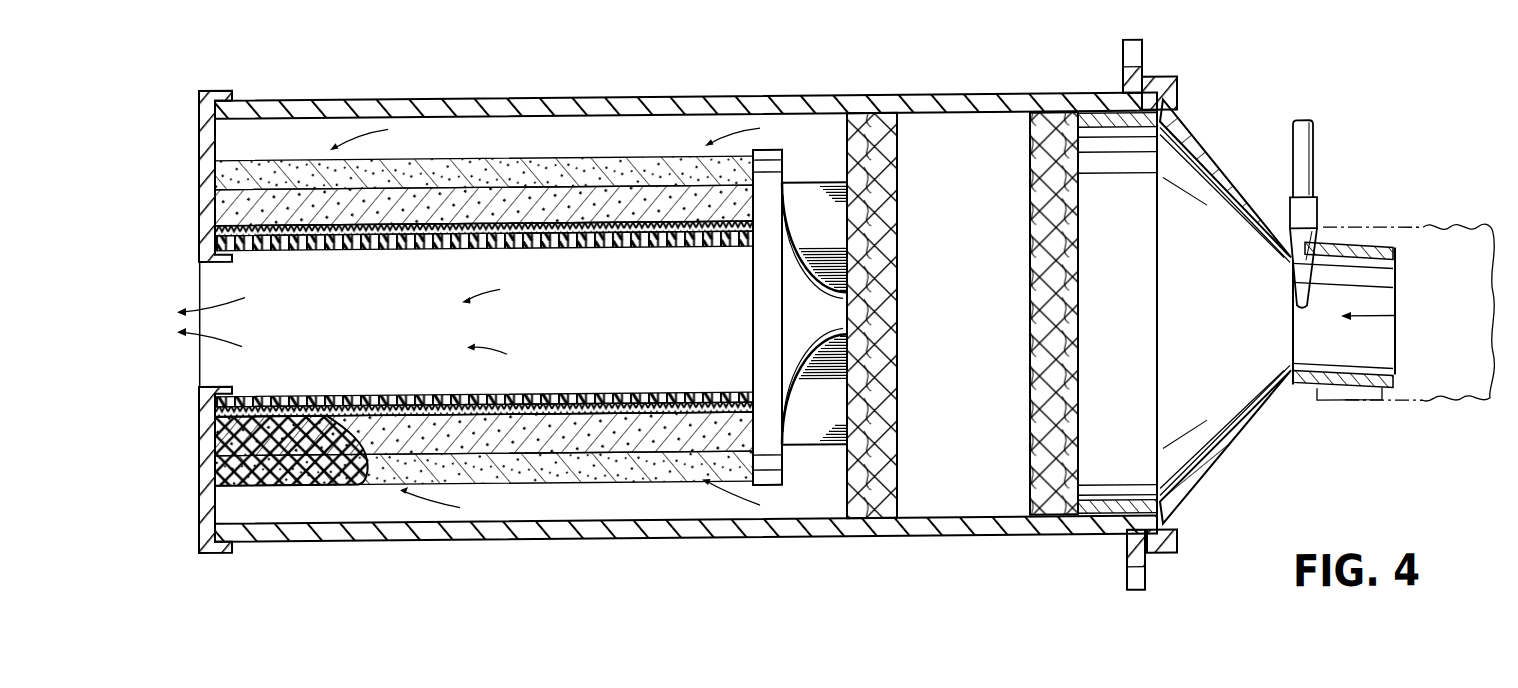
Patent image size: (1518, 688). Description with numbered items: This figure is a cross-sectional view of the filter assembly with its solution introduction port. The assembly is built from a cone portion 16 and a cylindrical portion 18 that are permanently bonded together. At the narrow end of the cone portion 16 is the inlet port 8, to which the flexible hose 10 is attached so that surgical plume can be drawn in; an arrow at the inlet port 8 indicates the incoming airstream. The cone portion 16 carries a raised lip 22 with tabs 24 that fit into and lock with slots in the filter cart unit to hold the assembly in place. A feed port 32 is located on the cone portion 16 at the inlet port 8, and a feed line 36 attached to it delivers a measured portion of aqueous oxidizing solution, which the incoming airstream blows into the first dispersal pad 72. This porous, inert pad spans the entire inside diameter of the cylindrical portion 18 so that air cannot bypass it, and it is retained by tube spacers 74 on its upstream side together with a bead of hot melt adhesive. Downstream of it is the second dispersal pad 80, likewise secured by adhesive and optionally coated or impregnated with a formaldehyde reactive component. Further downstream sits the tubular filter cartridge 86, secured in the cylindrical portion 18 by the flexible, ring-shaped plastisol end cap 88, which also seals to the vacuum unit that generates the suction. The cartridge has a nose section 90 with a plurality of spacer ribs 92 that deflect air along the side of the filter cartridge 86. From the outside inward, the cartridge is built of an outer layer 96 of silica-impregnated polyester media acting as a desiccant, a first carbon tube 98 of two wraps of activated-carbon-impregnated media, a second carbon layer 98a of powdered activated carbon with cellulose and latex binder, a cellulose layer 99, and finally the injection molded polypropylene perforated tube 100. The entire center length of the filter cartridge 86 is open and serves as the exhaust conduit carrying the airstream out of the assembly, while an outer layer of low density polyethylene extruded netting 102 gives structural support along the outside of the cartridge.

The inlet port 8 is at (1375, 394).
The flexible hose 10 is at (1443, 418).
The cone portion 16 is at (1248, 450).
The cylindrical portion 18 is at (804, 540).
The raised lip 22 is at (1150, 82).
The tabs 24 is at (1132, 45).
The feed port 32 is at (1312, 243).
The feed line 36 is at (1313, 143).
The first dispersal pad 72 is at (1045, 333).
The tube spacers 74 is at (1104, 503).
The second dispersal pad 80 is at (897, 368).
The filter cartridge 86 is at (498, 149).
The plastisol end cap 88 is at (199, 105).
The nose section 90 is at (782, 472).
The spacer ribs 92 is at (846, 300).
The outer layer 96 is at (520, 478).
The first carbon tube 98 is at (585, 447).
The second carbon layer 98a is at (580, 397).
The cellulose layer 99 is at (655, 401).
The perforated tube 100 is at (690, 396).
The extruded netting 102 is at (305, 484).